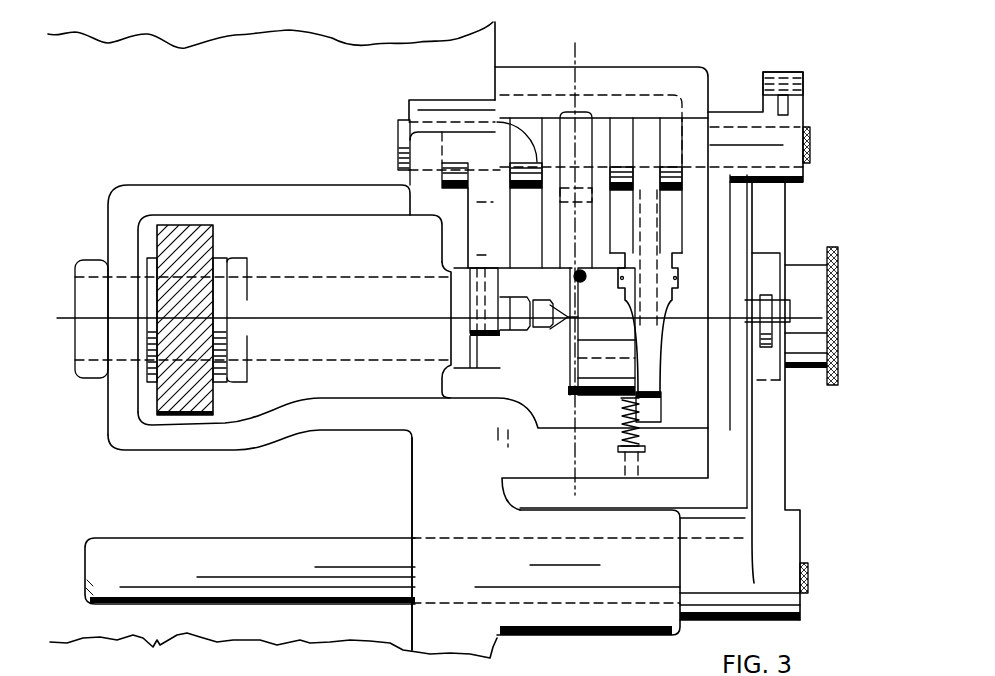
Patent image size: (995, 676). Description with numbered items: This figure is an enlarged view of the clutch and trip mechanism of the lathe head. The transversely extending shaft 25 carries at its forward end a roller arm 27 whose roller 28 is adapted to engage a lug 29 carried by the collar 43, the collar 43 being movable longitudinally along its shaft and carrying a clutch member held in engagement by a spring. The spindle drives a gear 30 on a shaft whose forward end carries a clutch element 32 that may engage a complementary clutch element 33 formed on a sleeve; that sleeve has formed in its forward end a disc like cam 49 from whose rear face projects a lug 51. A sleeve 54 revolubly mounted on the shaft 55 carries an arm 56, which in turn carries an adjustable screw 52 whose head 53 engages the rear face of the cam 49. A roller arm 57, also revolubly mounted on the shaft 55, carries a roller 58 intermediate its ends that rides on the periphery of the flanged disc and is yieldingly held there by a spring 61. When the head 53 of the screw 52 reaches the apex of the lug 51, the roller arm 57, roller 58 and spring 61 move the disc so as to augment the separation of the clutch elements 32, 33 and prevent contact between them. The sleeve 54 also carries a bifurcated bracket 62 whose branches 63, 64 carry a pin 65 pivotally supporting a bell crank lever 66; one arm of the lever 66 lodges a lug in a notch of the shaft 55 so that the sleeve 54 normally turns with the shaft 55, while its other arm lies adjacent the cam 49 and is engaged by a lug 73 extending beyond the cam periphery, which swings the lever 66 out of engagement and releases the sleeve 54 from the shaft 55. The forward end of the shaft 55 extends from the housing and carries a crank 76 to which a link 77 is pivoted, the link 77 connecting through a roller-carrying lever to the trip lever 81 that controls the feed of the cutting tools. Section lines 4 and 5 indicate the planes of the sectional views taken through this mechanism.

The section line 4- 4 is at (573, 43).
The section line 5- 5 is at (434, 311).
The transversely extending shaft 25 is at (197, 560).
The roller arm 27 is at (770, 483).
The roller 28 is at (765, 300).
The lug 29 is at (765, 265).
The gear 30 is at (140, 447).
The clutch element 32 is at (472, 348).
The complementary clutch element 33 is at (522, 332).
The collar 43 is at (797, 367).
The disc like cam 49 is at (600, 398).
The lug 51 is at (566, 320).
The adjustable screw 52 is at (534, 330).
The head 53 is at (522, 505).
The sleeve 54 is at (608, 135).
The shaft 55 is at (810, 130).
The arm 56 is at (487, 228).
The roller arm 57 is at (643, 165).
The roller 58 is at (648, 270).
The spring 61 is at (745, 430).
The bifurcated bracket 62 is at (556, 200).
The branch 63 is at (553, 195).
The branch 64 is at (600, 197).
The pin 65 is at (616, 158).
The bell crank lever 66 is at (570, 198).
The lug 73 is at (574, 273).
The crank 76 is at (765, 72).
The link 77 is at (783, 95).
The trip lever 81 is at (150, 360).